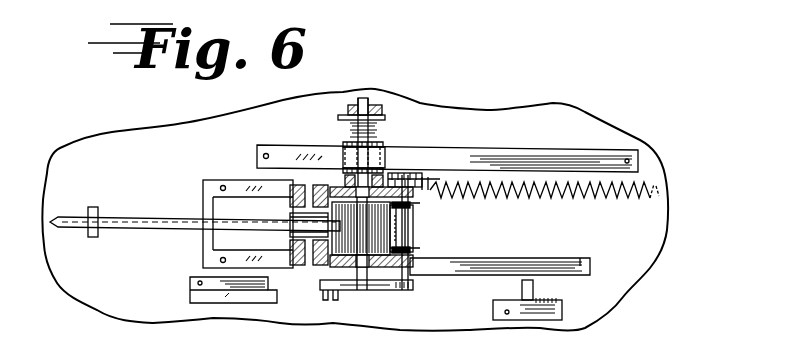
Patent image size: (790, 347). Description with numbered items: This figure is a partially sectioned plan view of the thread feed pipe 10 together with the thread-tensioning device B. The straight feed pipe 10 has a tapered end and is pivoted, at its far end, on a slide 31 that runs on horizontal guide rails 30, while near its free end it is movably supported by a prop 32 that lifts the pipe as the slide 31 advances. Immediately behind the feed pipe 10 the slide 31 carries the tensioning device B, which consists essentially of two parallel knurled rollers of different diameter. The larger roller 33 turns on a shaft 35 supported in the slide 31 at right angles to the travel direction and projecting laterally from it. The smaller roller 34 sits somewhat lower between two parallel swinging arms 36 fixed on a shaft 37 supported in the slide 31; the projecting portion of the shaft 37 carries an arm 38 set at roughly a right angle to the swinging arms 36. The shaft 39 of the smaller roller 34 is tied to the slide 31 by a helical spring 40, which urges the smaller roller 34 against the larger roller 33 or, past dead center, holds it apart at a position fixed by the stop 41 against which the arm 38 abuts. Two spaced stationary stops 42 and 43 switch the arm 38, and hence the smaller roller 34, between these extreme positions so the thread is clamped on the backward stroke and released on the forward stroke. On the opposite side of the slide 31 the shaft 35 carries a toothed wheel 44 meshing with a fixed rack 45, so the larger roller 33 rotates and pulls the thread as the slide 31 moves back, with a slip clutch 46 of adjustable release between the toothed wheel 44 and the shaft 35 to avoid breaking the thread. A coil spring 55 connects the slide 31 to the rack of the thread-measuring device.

The feed pipe 10 is at (123, 220).
The horizontal guide rails 30 is at (230, 183).
The slide 31 is at (317, 268).
The prop 32 is at (95, 237).
The larger roller 33 is at (343, 232).
The smaller roller 34 is at (409, 226).
The shaft 35 is at (349, 131).
The swinging arms 36 is at (414, 251).
The shaft 37 is at (417, 282).
The arm 38 is at (398, 290).
The shaft 39 is at (394, 175).
The helical spring 40 is at (413, 172).
The stop 41 is at (343, 298).
The stationary stop 42 is at (190, 290).
The stationary stop 43 is at (534, 284).
The toothed wheel 44 is at (385, 147).
The rack 45 is at (563, 158).
The slip clutch 46 is at (338, 110).
The coil spring 55 is at (640, 185).
The thread-tensioning device B is at (419, 293).